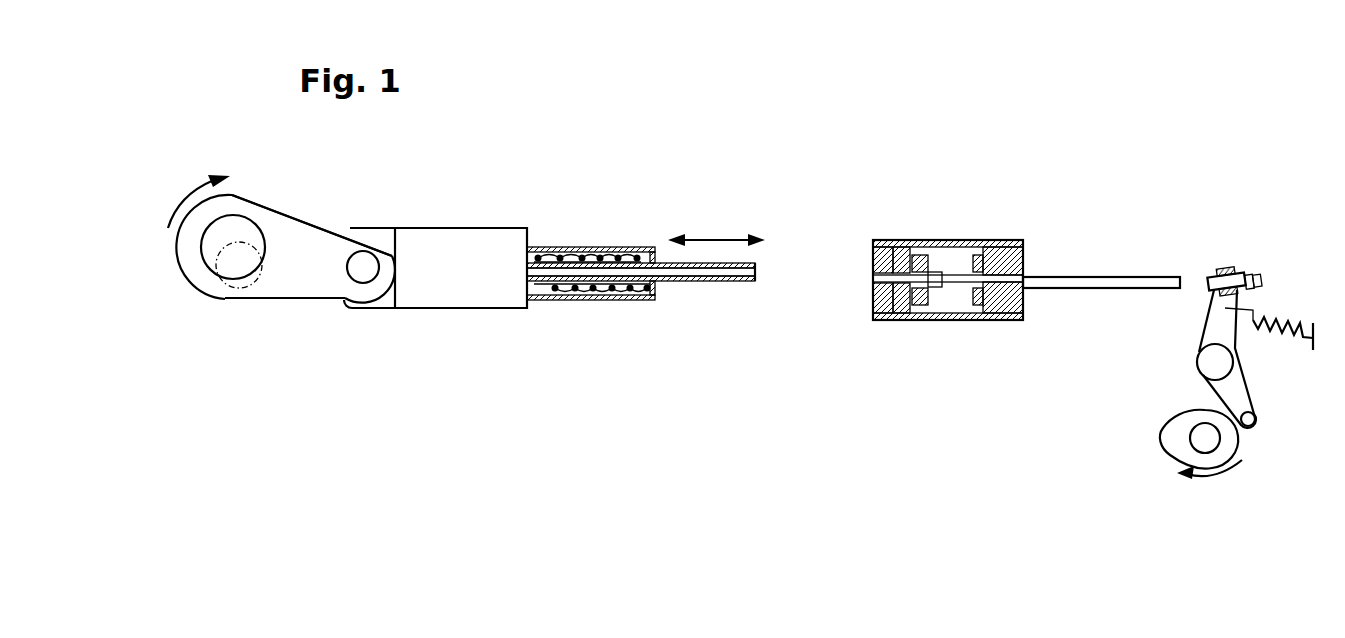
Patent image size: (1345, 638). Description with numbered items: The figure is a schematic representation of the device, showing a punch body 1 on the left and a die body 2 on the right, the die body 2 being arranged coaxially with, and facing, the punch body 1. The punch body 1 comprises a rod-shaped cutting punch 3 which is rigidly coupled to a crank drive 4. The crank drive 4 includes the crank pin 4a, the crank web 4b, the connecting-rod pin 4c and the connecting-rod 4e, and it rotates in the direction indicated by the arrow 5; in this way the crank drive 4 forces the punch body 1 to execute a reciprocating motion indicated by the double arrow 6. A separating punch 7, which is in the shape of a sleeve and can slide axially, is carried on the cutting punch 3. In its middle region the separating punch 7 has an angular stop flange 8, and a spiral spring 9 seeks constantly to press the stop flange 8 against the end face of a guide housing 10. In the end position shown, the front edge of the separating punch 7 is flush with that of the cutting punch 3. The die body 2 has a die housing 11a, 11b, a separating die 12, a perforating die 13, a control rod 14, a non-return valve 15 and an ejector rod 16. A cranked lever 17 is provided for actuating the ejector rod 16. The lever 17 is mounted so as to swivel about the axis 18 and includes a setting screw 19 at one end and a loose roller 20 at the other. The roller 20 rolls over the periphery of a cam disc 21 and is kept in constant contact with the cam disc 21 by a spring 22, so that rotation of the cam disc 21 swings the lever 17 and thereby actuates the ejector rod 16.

The punch body 1 is at (713, 297).
The die body 2 is at (951, 328).
The cutting punch 3 is at (665, 278).
The crank drive 4 is at (299, 308).
The crank pin 4a is at (208, 270).
The crank web 4b is at (305, 232).
The connecting-rod pin 4c is at (364, 266).
The connecting-rod 4e is at (460, 250).
The arrow 5 is at (184, 192).
The double arrow 6 is at (718, 238).
The separating punch 7 is at (677, 264).
The stop flange 8 is at (643, 247).
The spiral spring 9 is at (565, 252).
The guide housing 10 is at (587, 298).
The die housing 11a is at (890, 242).
The die housing 11b is at (1010, 322).
The separating die 12 is at (902, 245).
The perforating die 13 is at (917, 304).
The control rod 14 is at (1025, 250).
The non-return valve 15 is at (978, 255).
The ejector rod 16 is at (1100, 288).
The cranked lever 17 is at (1193, 331).
The axis 18 is at (1223, 358).
The setting screw 19 is at (1265, 282).
The loose roller 20 is at (1255, 422).
The cam disc 21 is at (1180, 450).
The spring 22 is at (1287, 316).